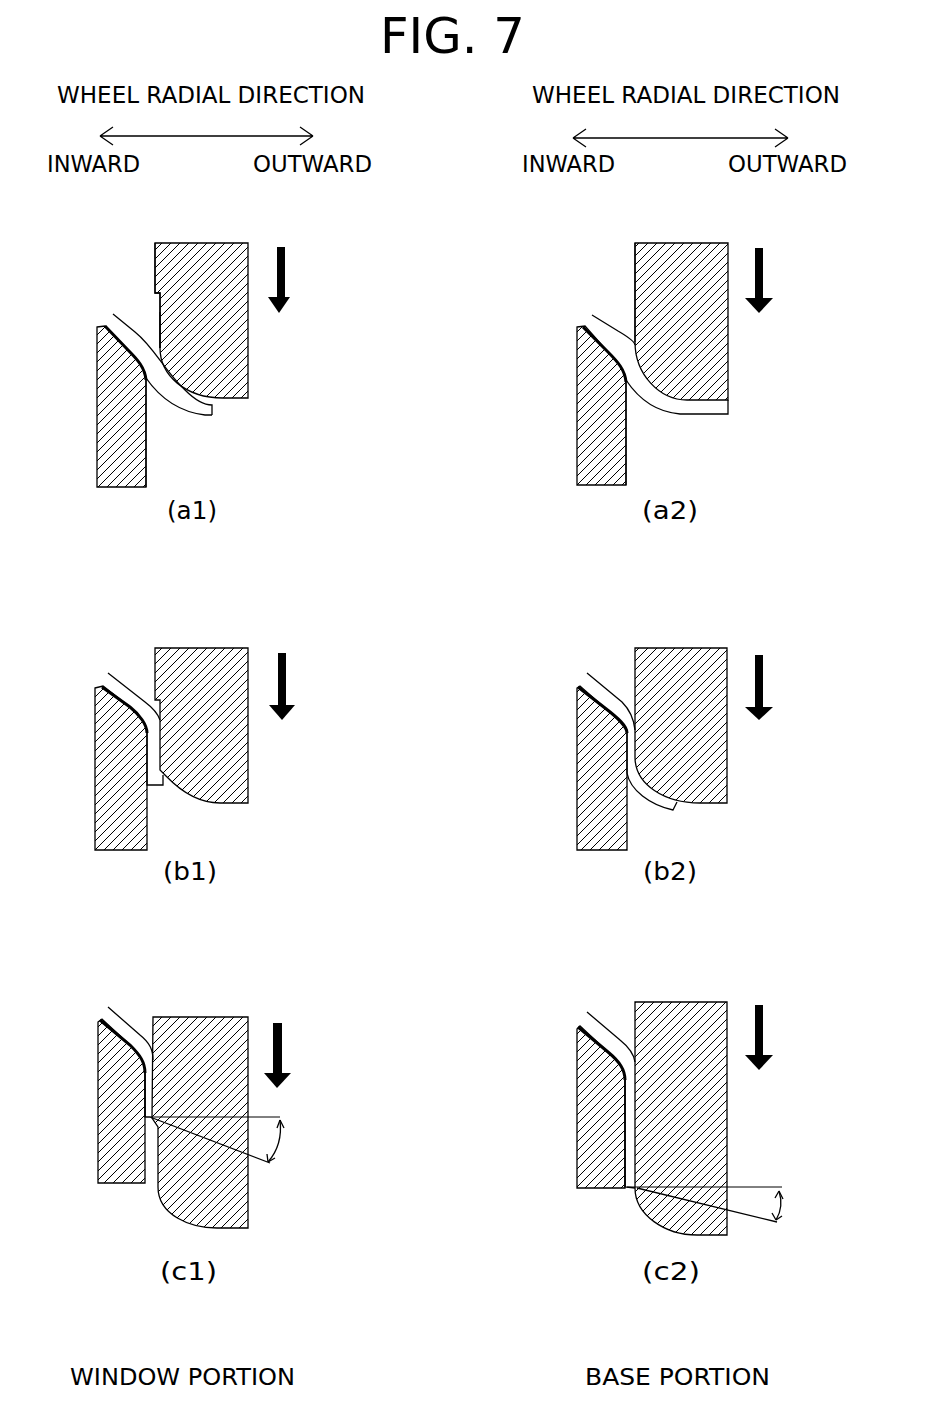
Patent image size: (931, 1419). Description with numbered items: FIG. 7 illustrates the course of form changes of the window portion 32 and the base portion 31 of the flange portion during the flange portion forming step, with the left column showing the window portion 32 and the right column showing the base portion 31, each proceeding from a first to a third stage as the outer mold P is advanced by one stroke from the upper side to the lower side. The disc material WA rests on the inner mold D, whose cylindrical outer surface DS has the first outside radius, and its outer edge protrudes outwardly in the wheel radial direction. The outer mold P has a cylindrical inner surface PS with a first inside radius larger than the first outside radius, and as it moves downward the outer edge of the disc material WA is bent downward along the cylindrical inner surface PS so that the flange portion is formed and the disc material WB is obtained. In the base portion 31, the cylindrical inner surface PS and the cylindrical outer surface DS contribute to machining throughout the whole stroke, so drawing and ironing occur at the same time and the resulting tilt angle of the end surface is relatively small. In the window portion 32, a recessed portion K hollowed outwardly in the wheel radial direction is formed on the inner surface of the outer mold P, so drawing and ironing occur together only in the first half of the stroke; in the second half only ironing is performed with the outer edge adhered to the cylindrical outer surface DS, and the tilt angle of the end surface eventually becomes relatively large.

The outer mold P is at (237, 357).
The inner mold D is at (104, 427).
The cylindrical inner surface PS is at (155, 258).
The cylindrical outer surface DS is at (147, 453).
The recessed portion K is at (160, 313).
The disc material WA is at (204, 414).
The disc material WB is at (117, 1018).
The base portion 31 is at (633, 1083).
The window portion 32 is at (143, 1068).